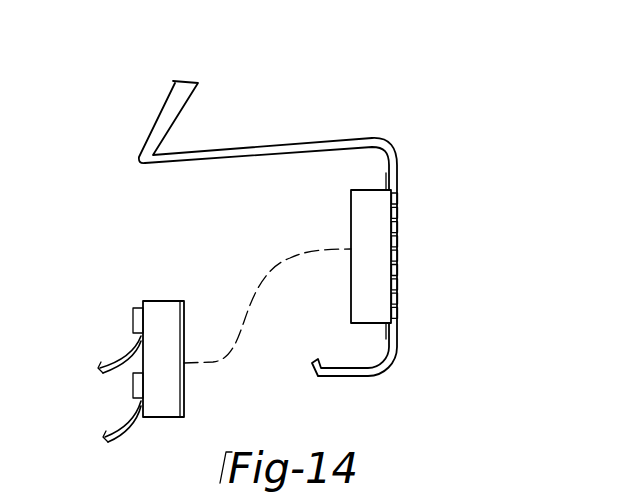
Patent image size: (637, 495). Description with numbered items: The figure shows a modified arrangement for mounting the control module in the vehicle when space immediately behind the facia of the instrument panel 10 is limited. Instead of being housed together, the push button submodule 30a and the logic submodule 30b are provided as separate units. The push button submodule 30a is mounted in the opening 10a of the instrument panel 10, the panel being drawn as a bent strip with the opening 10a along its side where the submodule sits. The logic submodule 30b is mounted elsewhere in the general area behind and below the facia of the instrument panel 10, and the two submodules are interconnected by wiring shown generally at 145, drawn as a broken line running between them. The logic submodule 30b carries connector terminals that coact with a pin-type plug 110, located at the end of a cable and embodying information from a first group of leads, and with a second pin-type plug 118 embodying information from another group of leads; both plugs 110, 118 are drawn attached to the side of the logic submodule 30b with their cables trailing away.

The instrument panel 10 is at (290, 135).
The opening in instrument panel 10a is at (398, 318).
The push button submodule 30a is at (351, 204).
The logic submodule 30b is at (167, 301).
The wiring 145 is at (287, 265).
The pin-type plug 118 is at (133, 318).
The pin-type plug 110 is at (133, 393).